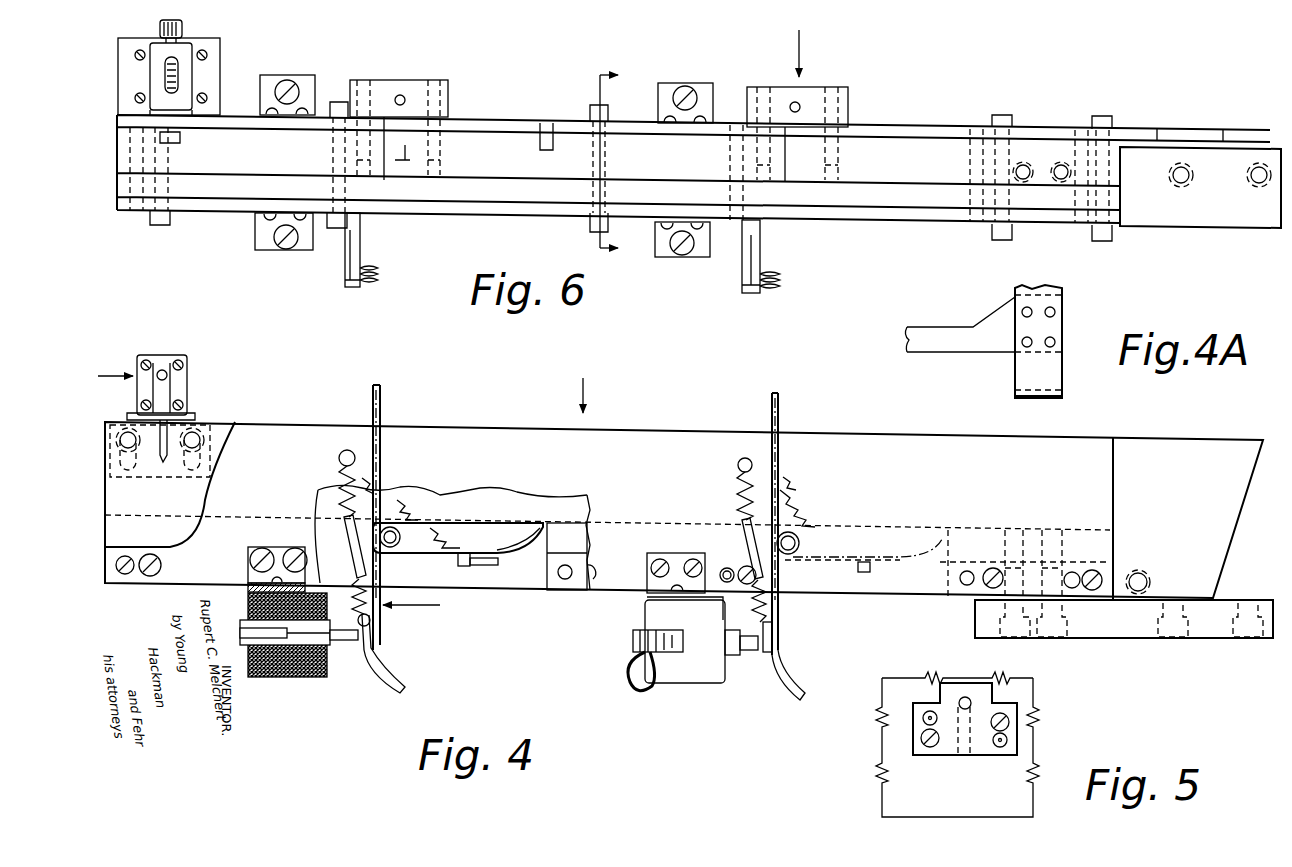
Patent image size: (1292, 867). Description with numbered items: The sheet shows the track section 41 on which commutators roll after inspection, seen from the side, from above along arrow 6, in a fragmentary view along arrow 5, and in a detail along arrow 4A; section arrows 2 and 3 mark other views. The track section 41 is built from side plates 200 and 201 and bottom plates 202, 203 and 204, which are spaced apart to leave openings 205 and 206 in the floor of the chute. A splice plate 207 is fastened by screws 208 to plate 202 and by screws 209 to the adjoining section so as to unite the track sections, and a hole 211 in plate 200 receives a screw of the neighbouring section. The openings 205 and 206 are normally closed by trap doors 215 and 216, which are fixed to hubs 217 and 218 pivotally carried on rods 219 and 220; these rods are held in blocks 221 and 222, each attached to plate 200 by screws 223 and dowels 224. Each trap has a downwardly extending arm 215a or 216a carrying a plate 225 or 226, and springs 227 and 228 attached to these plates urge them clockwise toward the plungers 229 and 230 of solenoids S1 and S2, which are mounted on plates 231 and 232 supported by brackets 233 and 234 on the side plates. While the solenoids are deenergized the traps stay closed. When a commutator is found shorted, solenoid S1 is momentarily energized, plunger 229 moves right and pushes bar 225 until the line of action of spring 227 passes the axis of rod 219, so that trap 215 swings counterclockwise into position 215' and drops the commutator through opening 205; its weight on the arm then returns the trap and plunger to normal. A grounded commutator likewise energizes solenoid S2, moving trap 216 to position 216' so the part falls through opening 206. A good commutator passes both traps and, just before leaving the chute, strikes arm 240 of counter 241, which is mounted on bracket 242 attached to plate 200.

In FIG. 6, the side plate 200 is at (937, 110).
In FIG. 4, the side plate 200 is at (1188, 436).
In FIG. 4, the side plate 201 is at (1113, 481).
In FIG. 4, the bottom plate 202 is at (948, 578).
In FIG. 6, the bottom plate 203 is at (552, 143).
In FIG. 4, the bottom plate 203 is at (547, 572).
In FIG. 4, the bottom plate 204 is at (193, 514).
In FIG. 4, the opening 205 is at (942, 533).
In FIG. 4, the opening 206 is at (538, 523).
In FIG. 4, the splice plate 207 is at (1128, 638).
In FIG. 4, the screws 208 is at (1058, 632).
In FIG. 4, the screws 209 is at (1180, 636).
In FIG. 4, the hole 211 is at (1147, 582).
In FIG. 4, the trap door 215 is at (866, 553).
In FIG. 4, the trap door open position 215' is at (793, 524).
In FIG. 4, the downwardly extending arm 215a is at (773, 647).
In FIG. 6, the trap door 216 is at (453, 129).
In FIG. 4A, the trap door 216 is at (1061, 336).
In FIG. 4, the trap door 216 is at (458, 524).
In FIG. 4, the trap door open position 216' is at (396, 517).
In FIG. 4A, the downwardly extending arm 216a is at (1063, 398).
In FIG. 4, the downwardly extending arm 216a is at (413, 560).
In FIG. 4, the hub 217 is at (800, 545).
In FIG. 4, the hub 218 is at (413, 520).
In FIG. 4, the rod 219 is at (793, 555).
In FIG. 5, the rod 219 is at (982, 668).
In FIG. 6, the rod 220 is at (405, 155).
In FIG. 4, the rod 220 is at (398, 540).
In FIG. 6, the block 221 is at (848, 97).
In FIG. 6, the block 222 is at (448, 88).
In FIG. 5, the screws 223 is at (1010, 724).
In FIG. 5, the dowels 224 is at (995, 745).
In FIG. 4, the plate 225 is at (763, 660).
In FIG. 4A, the plate 226 is at (958, 354).
In FIG. 4, the plate 226 is at (368, 643).
In FIG. 6, the spring 227 is at (762, 292).
In FIG. 4, the spring 227 is at (742, 500).
In FIG. 6, the spring 228 is at (360, 283).
In FIG. 4, the spring 228 is at (342, 488).
In FIG. 4, the plunger 229 is at (755, 655).
In FIG. 4, the plunger 230 is at (358, 644).
In FIG. 4, the plate 231 is at (643, 600).
In FIG. 4, the plate 232 is at (247, 592).
In FIG. 6, the bracket 233 is at (690, 84).
In FIG. 4, the bracket 233 is at (647, 568).
In FIG. 6, the bracket 234 is at (283, 78).
In FIG. 4, the bracket 234 is at (248, 566).
In FIG. 4, the arm 240 is at (170, 458).
In FIG. 6, the counter 241 is at (188, 48).
In FIG. 4, the counter 241 is at (187, 380).
In FIG. 6, the bracket 242 is at (220, 63).
In FIG. 6, the track section 41 is at (887, 223).
In FIG. 4, the track section 41 is at (923, 432).
In FIG. 4, the solenoid S1 is at (708, 684).
In FIG. 4, the solenoid S2 is at (302, 678).
In FIG. 4, the section arrow 2 is at (115, 385).
In FIG. 6, the section line 3 is at (610, 163).
In FIG. 4, the view direction arrow 4A is at (411, 608).
In FIG. 6, the view direction arrow 5 is at (805, 53).
In FIG. 4, the view direction arrow 6 is at (589, 392).